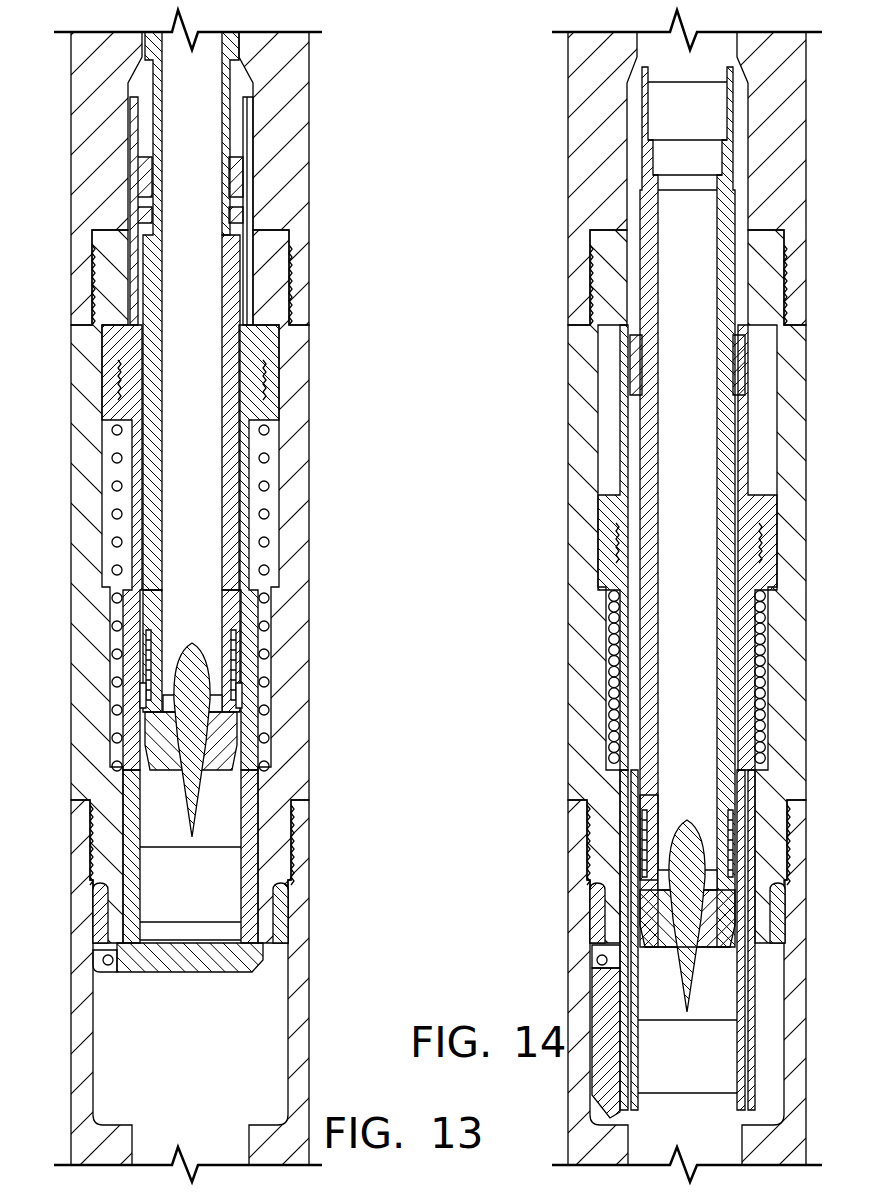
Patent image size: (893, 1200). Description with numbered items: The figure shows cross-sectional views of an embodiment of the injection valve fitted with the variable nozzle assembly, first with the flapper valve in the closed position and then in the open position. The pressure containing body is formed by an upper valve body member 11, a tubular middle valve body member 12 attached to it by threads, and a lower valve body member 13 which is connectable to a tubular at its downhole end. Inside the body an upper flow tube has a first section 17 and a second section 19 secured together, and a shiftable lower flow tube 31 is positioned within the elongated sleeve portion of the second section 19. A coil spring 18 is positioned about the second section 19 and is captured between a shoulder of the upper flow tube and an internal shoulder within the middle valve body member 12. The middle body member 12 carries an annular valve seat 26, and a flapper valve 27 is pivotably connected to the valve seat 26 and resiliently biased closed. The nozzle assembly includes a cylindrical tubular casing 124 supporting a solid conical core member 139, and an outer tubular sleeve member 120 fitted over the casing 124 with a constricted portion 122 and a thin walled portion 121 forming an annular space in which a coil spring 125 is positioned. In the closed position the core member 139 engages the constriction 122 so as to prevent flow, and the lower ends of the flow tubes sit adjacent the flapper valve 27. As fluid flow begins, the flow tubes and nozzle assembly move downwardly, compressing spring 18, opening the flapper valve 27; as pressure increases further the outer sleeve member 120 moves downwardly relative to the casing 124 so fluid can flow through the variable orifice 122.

In FIG. 13, the upper valve body member 11 is at (312, 100).
In FIG. 14, the upper valve body member 11 is at (568, 105).
In FIG. 13, the tubular middle valve body member 12 is at (311, 385).
In FIG. 14, the tubular middle valve body member 12 is at (568, 390).
In FIG. 13, the lower valve body member 13 is at (311, 1110).
In FIG. 14, the lower valve body member 13 is at (806, 1108).
In FIG. 13, the first section of upper flow tube 17 is at (252, 305).
In FIG. 14, the first section of upper flow tube 17 is at (630, 480).
In FIG. 13, the coil spring 18 is at (268, 643).
In FIG. 14, the coil spring 18 is at (612, 678).
In FIG. 13, the second section of upper flow tube 19 is at (256, 510).
In FIG. 14, the second section of upper flow tube 19 is at (612, 660).
In FIG. 13, the annular valve seat 26 is at (100, 918).
In FIG. 14, the annular valve seat 26 is at (590, 918).
In FIG. 13, the flapper valve 27 is at (185, 975).
In FIG. 14, the flapper valve 27 is at (603, 1067).
In FIG. 13, the shiftable lower flow tube 31 is at (244, 842).
In FIG. 14, the shiftable lower flow tube 31 is at (742, 688).
In FIG. 13, the outer tubular sleeve member 120 is at (155, 738).
In FIG. 14, the outer tubular sleeve member 120 is at (646, 922).
In FIG. 13, the thin walled portion 121 is at (145, 690).
In FIG. 13, the constricted portion 122 is at (178, 770).
In FIG. 14, the constricted portion 122 is at (668, 937).
In FIG. 13, the cylindrical tubular casing 124 is at (166, 622).
In FIG. 14, the cylindrical tubular casing 124 is at (658, 803).
In FIG. 13, the coil spring 125 is at (148, 660).
In FIG. 13, the solid conical core member 139 is at (202, 690).
In FIG. 14, the solid conical core member 139 is at (640, 845).